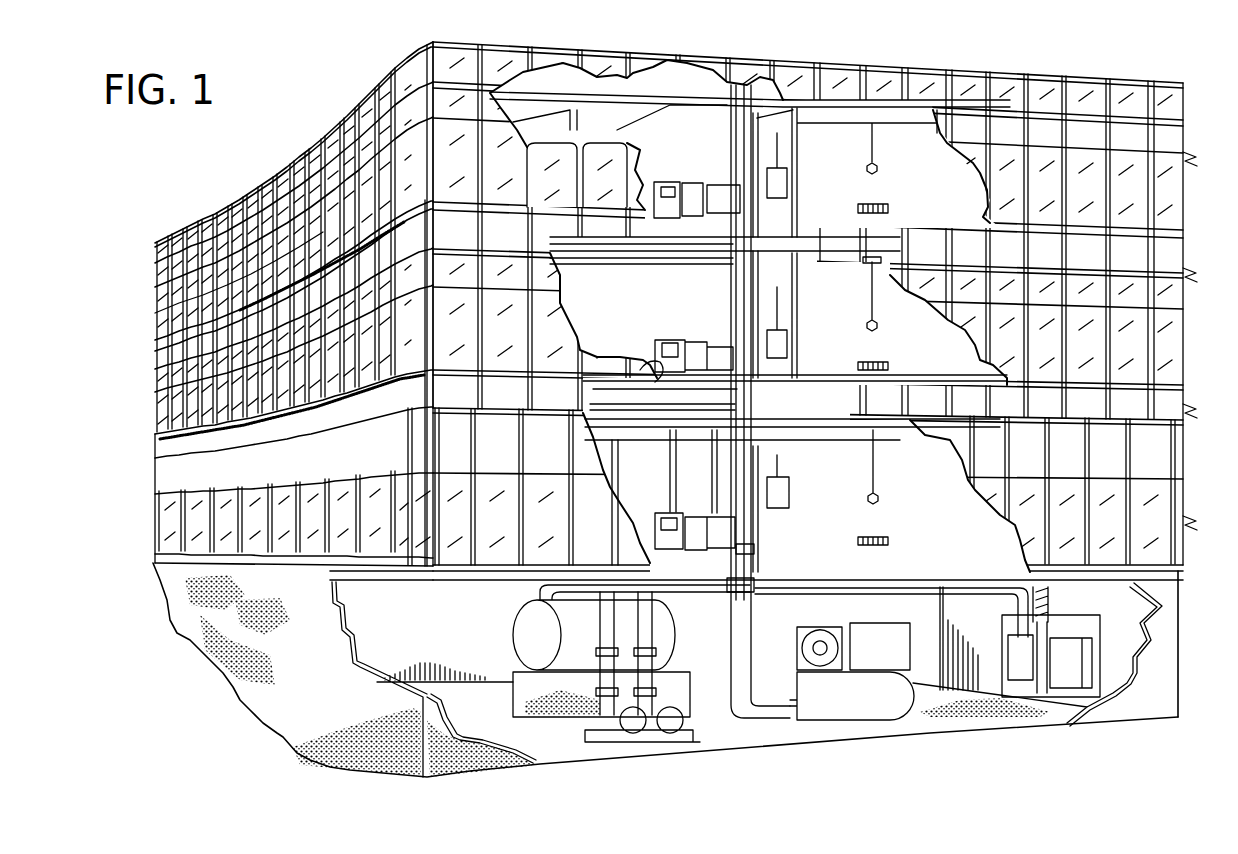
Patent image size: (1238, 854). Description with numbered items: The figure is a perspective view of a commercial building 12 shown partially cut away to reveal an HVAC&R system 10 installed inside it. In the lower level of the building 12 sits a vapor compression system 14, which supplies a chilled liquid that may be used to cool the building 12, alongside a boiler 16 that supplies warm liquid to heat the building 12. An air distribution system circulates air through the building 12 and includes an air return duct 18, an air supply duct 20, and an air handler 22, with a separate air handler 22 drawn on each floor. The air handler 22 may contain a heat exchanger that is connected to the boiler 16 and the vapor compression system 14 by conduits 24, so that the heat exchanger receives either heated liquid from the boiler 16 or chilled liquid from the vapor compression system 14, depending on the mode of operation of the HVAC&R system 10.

The HVAC&R system 10 is at (962, 758).
The building 12 is at (1047, 76).
The vapor compression system 14 is at (859, 705).
The boiler 16 is at (506, 618).
The air return duct 18 is at (645, 367).
The air supply duct 20 is at (723, 111).
The air handler 22 is at (695, 340).
The conduits 24 is at (748, 546).